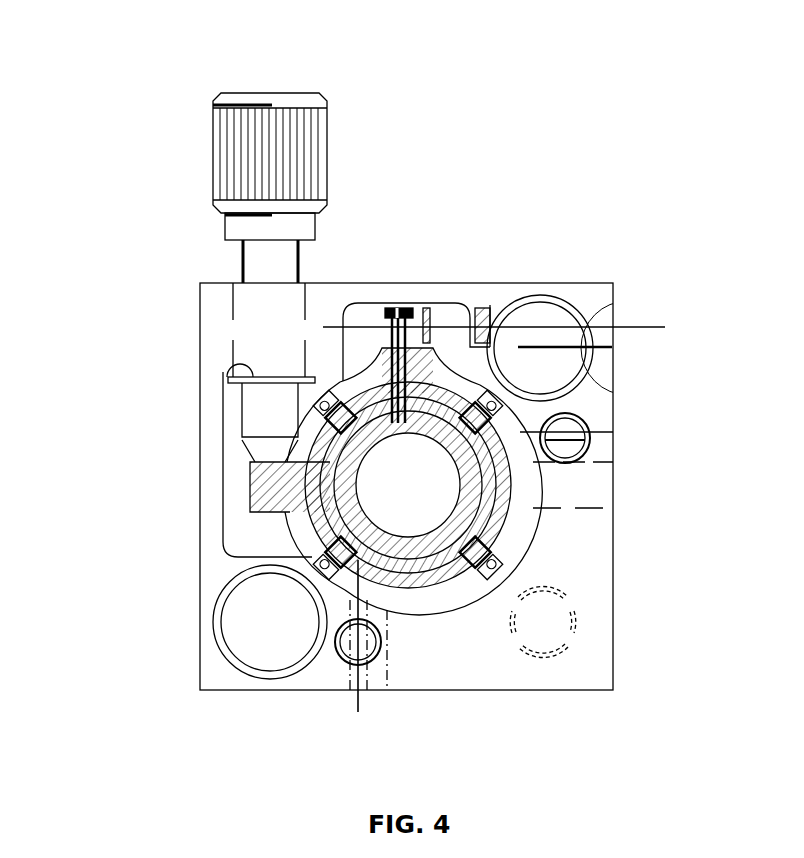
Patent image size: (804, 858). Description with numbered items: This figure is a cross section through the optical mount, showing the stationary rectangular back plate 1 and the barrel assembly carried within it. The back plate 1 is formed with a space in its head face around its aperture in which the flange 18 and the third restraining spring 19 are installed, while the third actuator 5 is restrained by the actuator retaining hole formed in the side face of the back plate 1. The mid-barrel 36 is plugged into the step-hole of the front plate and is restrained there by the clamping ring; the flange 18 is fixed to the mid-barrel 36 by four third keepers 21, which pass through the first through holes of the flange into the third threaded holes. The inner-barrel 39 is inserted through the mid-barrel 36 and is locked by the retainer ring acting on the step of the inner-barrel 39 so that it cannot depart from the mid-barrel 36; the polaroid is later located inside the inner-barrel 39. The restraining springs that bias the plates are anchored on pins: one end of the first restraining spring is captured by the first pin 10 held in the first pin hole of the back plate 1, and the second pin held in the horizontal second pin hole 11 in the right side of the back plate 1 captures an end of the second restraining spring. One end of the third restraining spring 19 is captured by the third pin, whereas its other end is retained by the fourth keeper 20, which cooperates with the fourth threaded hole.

The rectangular back plate 1 is at (493, 292).
The third actuator 5 is at (270, 152).
The first pin 10 is at (358, 642).
The second pin hole 11 is at (588, 440).
The flange 18 is at (290, 498).
The third restraining spring 19 is at (482, 318).
The fourth keeper 20 is at (393, 343).
The third keepers 21 is at (503, 565).
The mid-barrel 36 is at (285, 513).
The inner-barrel 39 is at (345, 462).